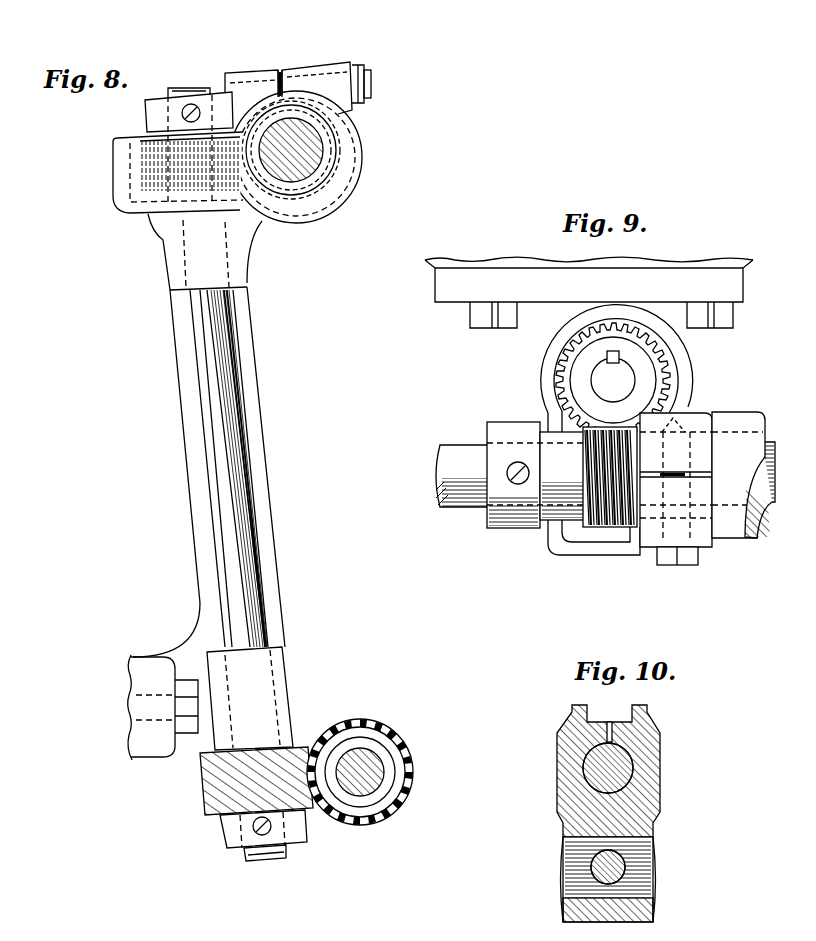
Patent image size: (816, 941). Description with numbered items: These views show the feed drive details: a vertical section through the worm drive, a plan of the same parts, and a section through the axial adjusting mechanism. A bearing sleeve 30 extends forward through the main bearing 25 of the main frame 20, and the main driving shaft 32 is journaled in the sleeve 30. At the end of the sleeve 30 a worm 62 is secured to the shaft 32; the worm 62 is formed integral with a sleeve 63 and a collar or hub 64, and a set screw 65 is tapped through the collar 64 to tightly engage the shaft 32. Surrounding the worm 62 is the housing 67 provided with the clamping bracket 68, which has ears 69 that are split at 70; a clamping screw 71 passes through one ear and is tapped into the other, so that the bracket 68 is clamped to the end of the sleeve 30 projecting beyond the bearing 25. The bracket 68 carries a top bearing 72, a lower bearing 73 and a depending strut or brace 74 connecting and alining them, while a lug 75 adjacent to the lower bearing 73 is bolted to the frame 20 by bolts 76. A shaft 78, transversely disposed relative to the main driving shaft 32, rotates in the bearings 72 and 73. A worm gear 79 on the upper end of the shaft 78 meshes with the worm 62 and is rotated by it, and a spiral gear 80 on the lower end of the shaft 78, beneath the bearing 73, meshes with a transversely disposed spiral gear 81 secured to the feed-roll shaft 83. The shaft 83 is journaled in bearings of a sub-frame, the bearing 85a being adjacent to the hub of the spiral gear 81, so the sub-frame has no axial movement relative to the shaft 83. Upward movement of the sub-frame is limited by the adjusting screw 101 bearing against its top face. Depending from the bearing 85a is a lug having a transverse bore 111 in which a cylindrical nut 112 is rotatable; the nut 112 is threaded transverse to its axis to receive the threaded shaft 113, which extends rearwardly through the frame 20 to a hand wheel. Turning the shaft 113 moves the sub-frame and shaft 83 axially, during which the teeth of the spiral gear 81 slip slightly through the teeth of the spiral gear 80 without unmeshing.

In FIG. 8, the main frame 20 is at (128, 665).
In FIG. 9, the main frame 20 is at (542, 257).
In FIG. 9, the main bearing 25 is at (740, 533).
In FIG. 9, the bearing sleeve 30 is at (765, 513).
In FIG. 8, the main driving shaft 32 is at (293, 173).
In FIG. 9, the main driving shaft 32 is at (470, 445).
In FIG. 8, the worm 62 is at (340, 148).
In FIG. 9, the worm 62 is at (622, 527).
In FIG. 9, the sleeve 63 is at (573, 528).
In FIG. 9, the collar or hub 64 is at (495, 530).
In FIG. 9, the set screw 65 is at (510, 462).
In FIG. 8, the housing 67 is at (335, 202).
In FIG. 9, the housing 67 is at (602, 557).
In FIG. 8, the clamping bracket 68 is at (257, 103).
In FIG. 9, the clamping bracket 68 is at (698, 453).
In FIG. 8, the ears 69 is at (330, 63).
In FIG. 9, the ears 69 is at (722, 470).
In FIG. 8, the split 70 is at (280, 70).
In FIG. 9, the split 70 is at (712, 474).
In FIG. 8, the clamping screw 71 is at (367, 87).
In FIG. 9, the clamping screw 71 is at (688, 565).
In FIG. 8, the top bearing 72 is at (168, 260).
In FIG. 8, the lower bearing 73 is at (280, 675).
In FIG. 8, the depending strut or brace 74 is at (253, 410).
In FIG. 8, the lug 75 is at (148, 740).
In FIG. 9, the lug 75 is at (462, 283).
In FIG. 8, the bolts 76 is at (190, 708).
In FIG. 9, the bolts 76 is at (473, 317).
In FIG. 8, the shaft 78 is at (227, 338).
In FIG. 8, the worm gear 79 is at (115, 182).
In FIG. 9, the worm gear 79 is at (560, 357).
In FIG. 8, the spiral gear 80 is at (218, 792).
In FIG. 8, the spiral gear 81 is at (373, 722).
In FIG. 8, the feed-roll shaft 83 is at (380, 765).
In FIG. 10, the feed-roll shaft 83 is at (582, 772).
In FIG. 10, the bearing 85a is at (653, 768).
In FIG. 10, the adjusting screw 101 is at (640, 825).
In FIG. 10, the transverse bore 111 is at (568, 830).
In FIG. 10, the cylindrical nut 112 is at (590, 863).
In FIG. 10, the threaded shaft 113 is at (618, 872).